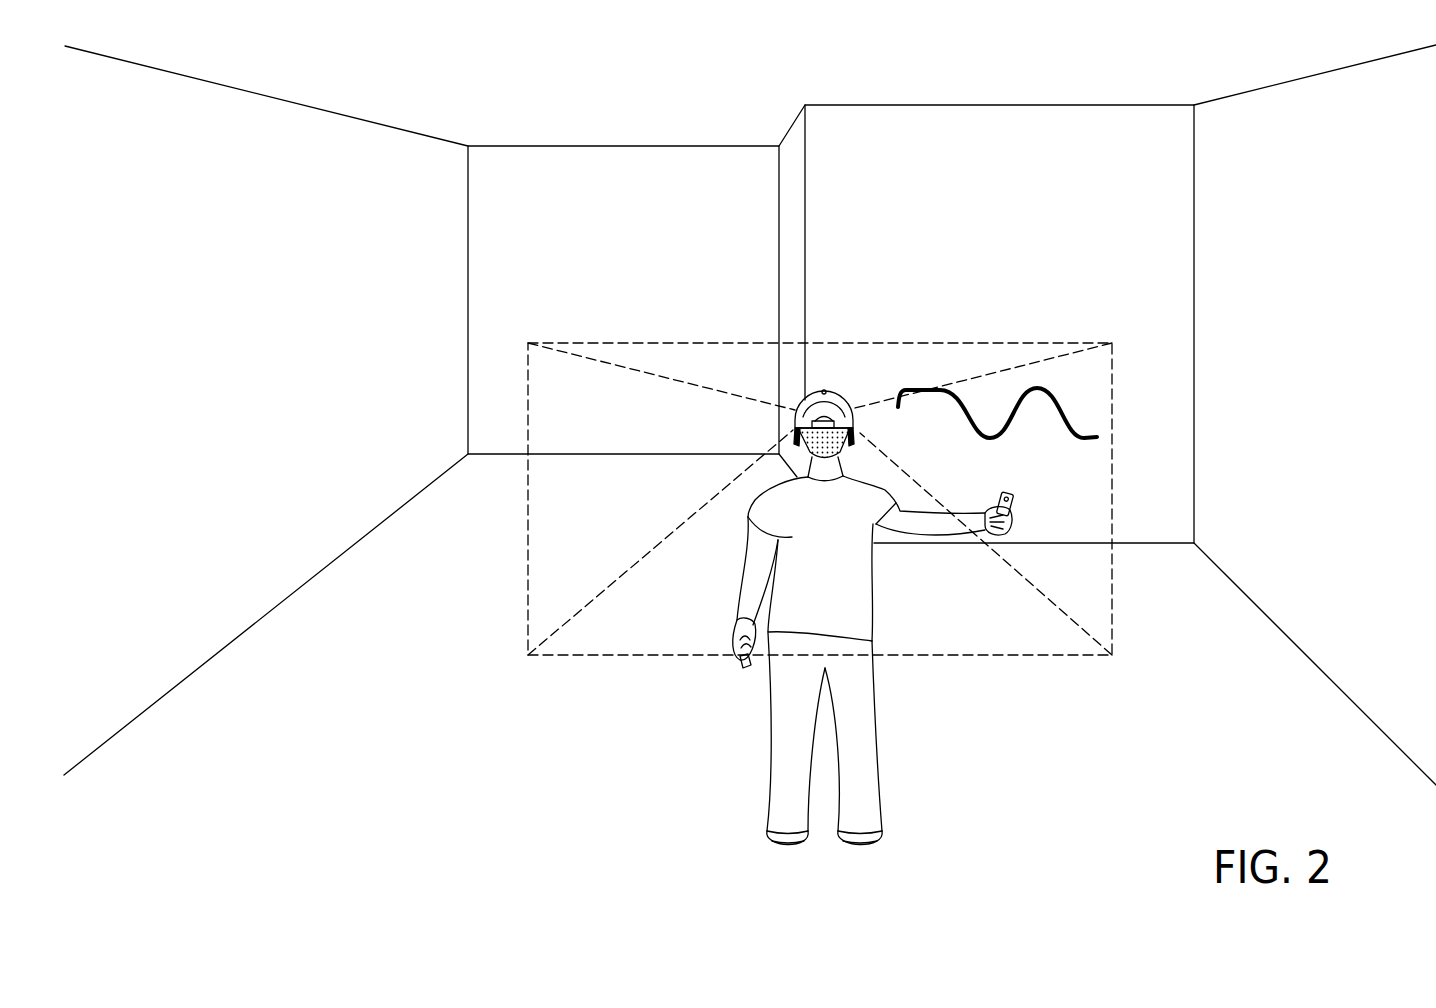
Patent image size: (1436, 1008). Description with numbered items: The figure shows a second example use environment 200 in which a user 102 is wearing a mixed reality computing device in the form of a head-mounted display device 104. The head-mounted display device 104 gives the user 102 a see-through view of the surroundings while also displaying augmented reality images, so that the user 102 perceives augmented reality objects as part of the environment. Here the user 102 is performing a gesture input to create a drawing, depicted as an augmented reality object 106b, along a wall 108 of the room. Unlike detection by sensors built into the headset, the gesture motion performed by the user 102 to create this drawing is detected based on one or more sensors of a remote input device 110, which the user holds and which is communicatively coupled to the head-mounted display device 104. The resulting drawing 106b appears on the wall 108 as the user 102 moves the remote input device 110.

The use environment 200 is at (313, 230).
The user 102 is at (875, 693).
The head-mounted display device 104 is at (796, 441).
The augmented reality object 106b is at (1029, 390).
The wall 108 is at (1038, 278).
The remote input device 110 is at (1010, 495).